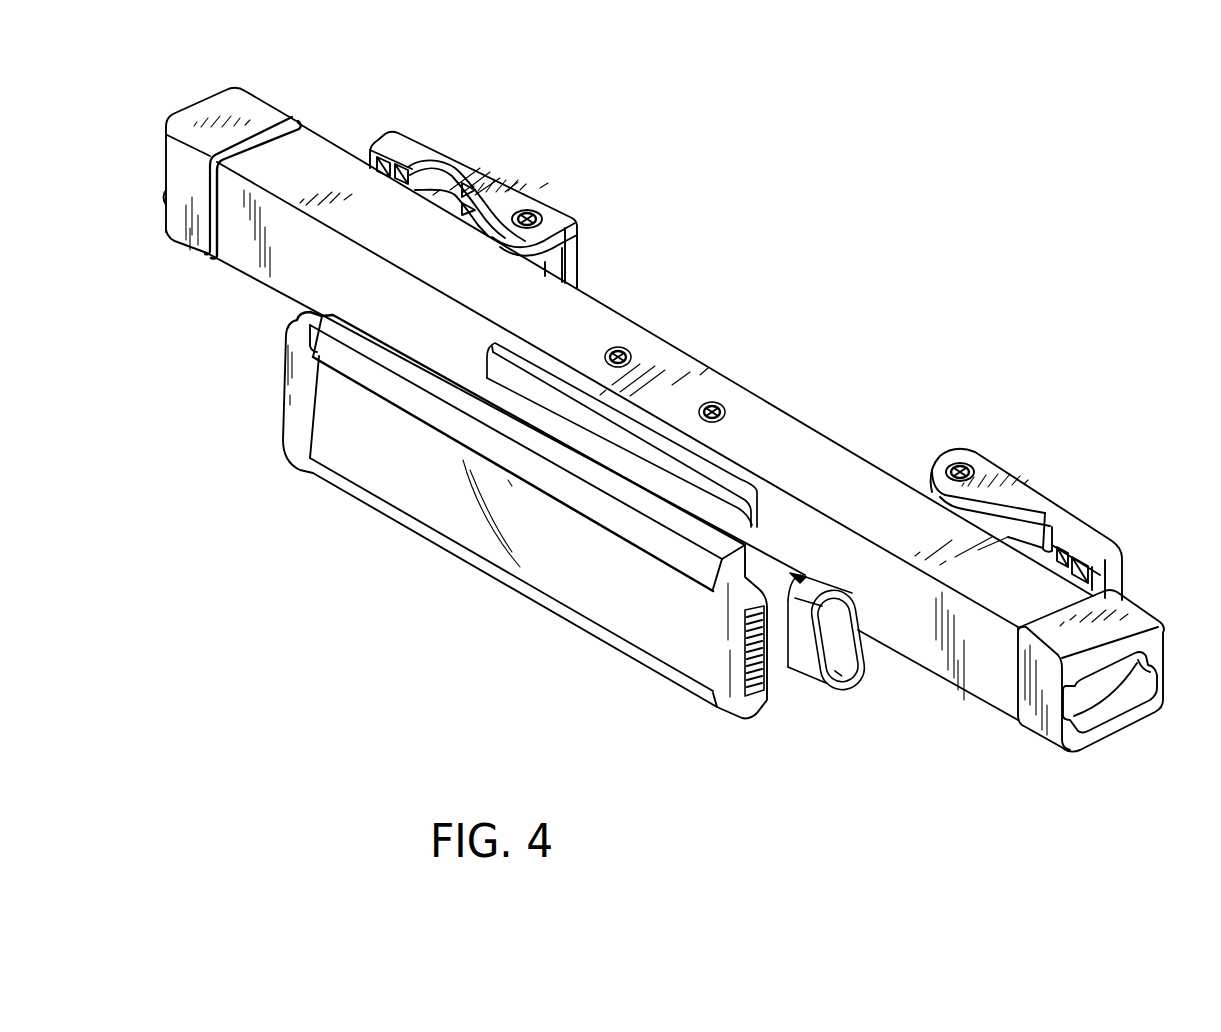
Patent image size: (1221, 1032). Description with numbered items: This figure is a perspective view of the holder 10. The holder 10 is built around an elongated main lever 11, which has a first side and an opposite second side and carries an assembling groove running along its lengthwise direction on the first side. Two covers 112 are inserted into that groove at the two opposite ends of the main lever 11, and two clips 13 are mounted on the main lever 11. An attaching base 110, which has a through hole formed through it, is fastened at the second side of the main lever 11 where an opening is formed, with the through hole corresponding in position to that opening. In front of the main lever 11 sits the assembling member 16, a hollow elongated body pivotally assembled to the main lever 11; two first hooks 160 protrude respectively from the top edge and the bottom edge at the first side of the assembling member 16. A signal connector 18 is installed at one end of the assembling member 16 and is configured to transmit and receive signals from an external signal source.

The holder 10 is at (310, 167).
The main lever 11 is at (777, 423).
The attaching base 110 is at (528, 405).
The cover 112 is at (1128, 615).
The clip 13 is at (421, 143).
The assembling member 16 is at (313, 413).
The first hook 160 is at (323, 348).
The signal connector 18 is at (766, 677).